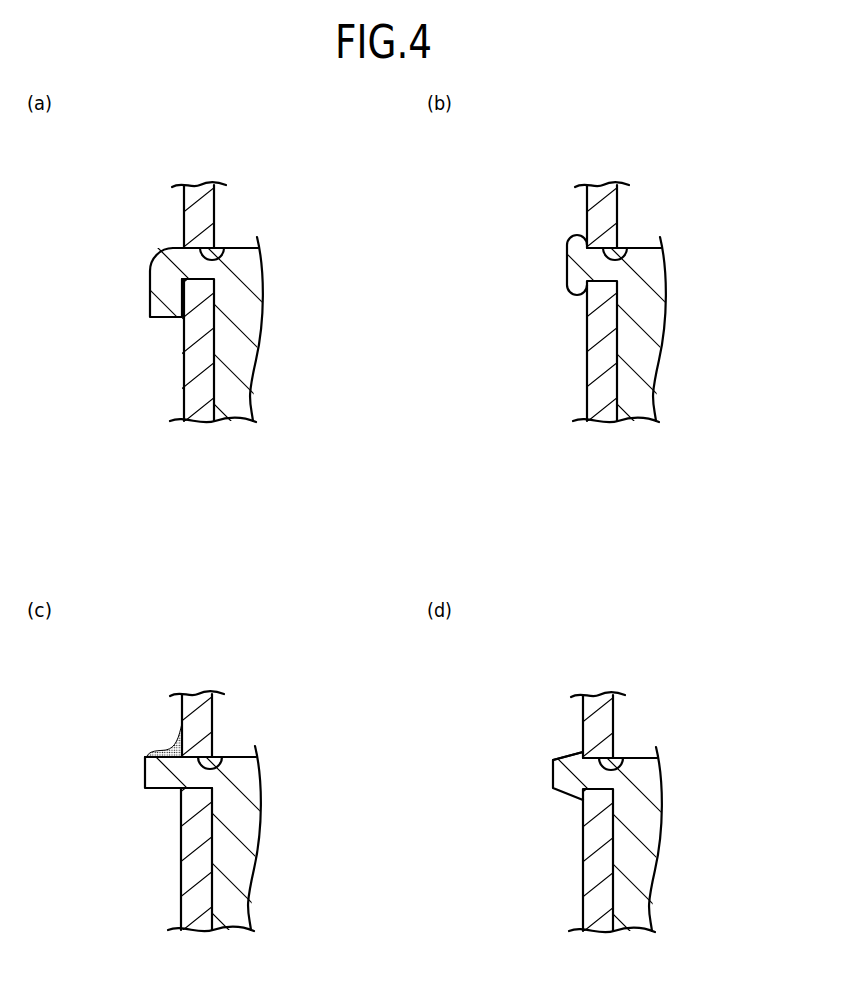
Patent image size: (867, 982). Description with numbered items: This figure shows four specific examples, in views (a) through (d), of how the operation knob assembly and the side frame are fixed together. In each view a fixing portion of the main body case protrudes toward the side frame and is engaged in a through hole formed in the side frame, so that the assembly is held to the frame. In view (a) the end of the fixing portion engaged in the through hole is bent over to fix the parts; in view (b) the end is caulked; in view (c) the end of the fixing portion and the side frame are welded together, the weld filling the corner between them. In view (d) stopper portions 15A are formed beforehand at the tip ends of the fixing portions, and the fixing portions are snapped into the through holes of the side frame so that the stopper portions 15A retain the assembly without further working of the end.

The stopper portion 15A is at (517, 743).